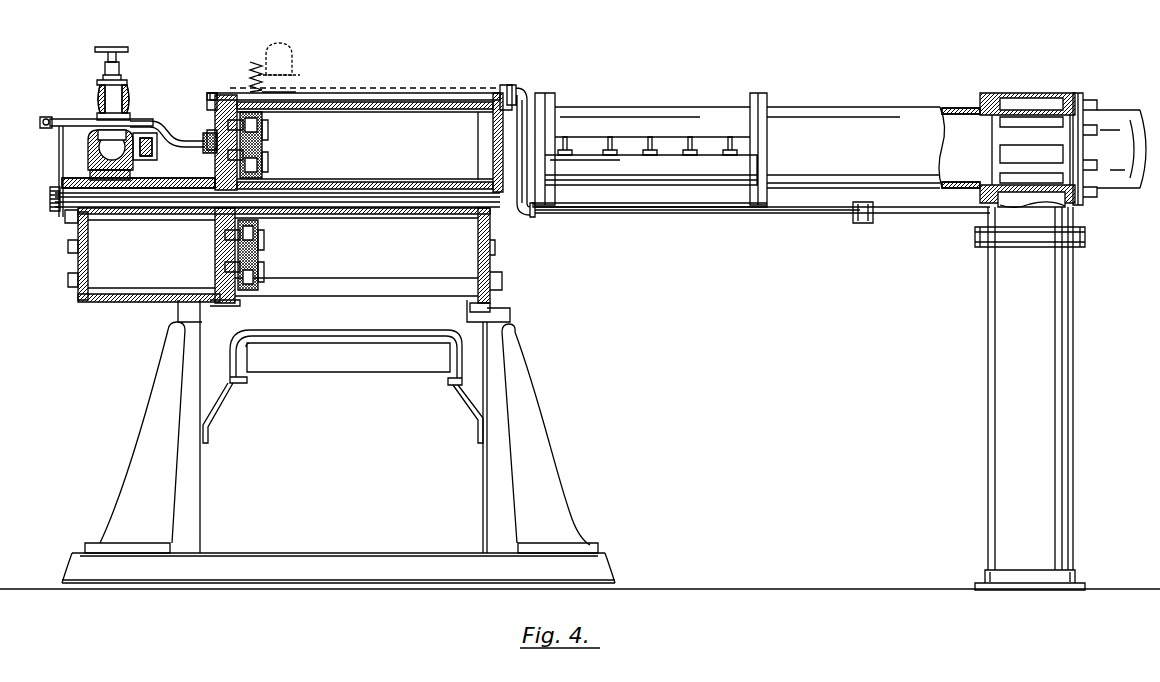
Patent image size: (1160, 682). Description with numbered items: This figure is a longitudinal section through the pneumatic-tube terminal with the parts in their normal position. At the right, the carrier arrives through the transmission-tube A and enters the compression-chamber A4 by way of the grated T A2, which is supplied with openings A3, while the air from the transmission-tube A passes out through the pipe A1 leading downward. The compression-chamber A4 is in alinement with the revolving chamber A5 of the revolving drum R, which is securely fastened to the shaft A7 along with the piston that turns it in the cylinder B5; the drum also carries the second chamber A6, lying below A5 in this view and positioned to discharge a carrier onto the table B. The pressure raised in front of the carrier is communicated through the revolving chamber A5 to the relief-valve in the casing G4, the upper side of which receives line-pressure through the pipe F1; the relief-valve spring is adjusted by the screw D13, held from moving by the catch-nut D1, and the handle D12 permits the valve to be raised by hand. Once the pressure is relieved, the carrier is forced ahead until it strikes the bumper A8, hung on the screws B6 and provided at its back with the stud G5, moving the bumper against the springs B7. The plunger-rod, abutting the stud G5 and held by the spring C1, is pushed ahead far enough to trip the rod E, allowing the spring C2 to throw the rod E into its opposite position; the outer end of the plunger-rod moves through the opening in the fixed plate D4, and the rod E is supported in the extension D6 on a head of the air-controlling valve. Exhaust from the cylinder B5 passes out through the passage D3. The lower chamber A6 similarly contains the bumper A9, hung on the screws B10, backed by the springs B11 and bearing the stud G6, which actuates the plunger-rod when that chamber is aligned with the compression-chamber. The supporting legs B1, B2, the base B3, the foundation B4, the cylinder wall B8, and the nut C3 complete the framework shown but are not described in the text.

The transmission-tube A is at (1125, 110).
The pipe A1 is at (1030, 398).
The grated T A2 is at (1040, 88).
The openings A3 is at (1031, 150).
The compression-chamber A4 is at (678, 145).
The revolving chamber A5 is at (281, 138).
The chamber A6 is at (290, 260).
The shaft A7 is at (338, 208).
The bumper A8 is at (262, 148).
The bumper A9 is at (260, 258).
The table B is at (352, 320).
The right leg B1 is at (522, 486).
The left leg B2 is at (136, 496).
The base plate B3 is at (342, 574).
The foundation B4 is at (770, 586).
The cylinder B5 is at (142, 243).
The screws B6 is at (265, 165).
The springs B7 is at (190, 174).
The cylinder end wall B8 is at (443, 112).
The screws B10 is at (262, 268).
The springs B11 is at (178, 280).
The spring C1 is at (110, 48).
The spring C2 is at (59, 155).
The adjusting nut C3 is at (50, 212).
The catch-nut D1 is at (252, 80).
The passage D3 is at (152, 148).
The fixed plate D4 is at (45, 117).
The extension D6 is at (95, 140).
The handle D12 is at (262, 58).
The screw D13 is at (290, 88).
The rod E is at (95, 120).
The pipe F1 is at (690, 215).
The casing G4 is at (210, 93).
The stud G5 is at (225, 125).
The stud G6 is at (228, 258).
The revolving drum R is at (350, 178).